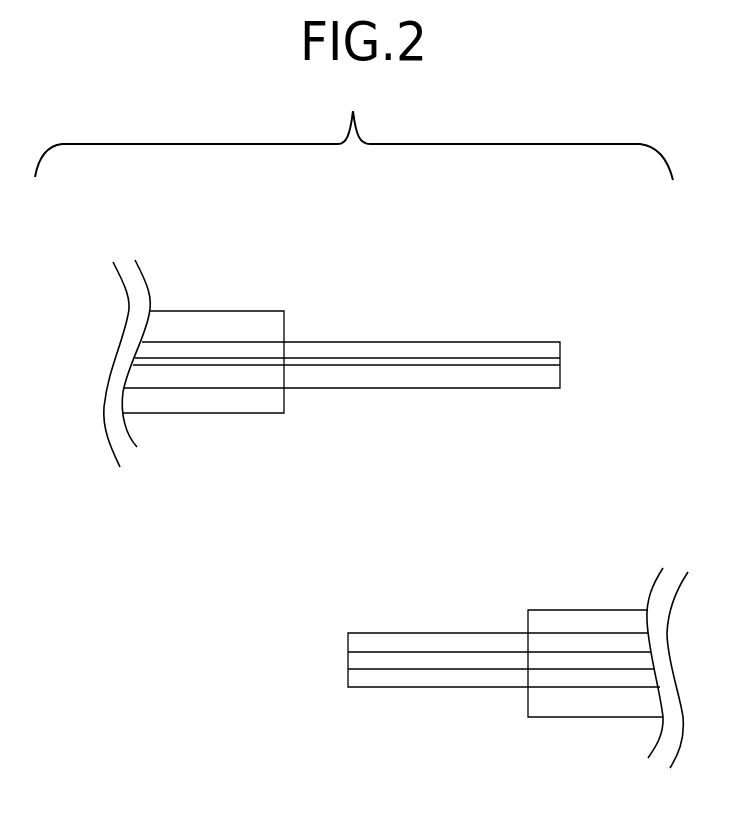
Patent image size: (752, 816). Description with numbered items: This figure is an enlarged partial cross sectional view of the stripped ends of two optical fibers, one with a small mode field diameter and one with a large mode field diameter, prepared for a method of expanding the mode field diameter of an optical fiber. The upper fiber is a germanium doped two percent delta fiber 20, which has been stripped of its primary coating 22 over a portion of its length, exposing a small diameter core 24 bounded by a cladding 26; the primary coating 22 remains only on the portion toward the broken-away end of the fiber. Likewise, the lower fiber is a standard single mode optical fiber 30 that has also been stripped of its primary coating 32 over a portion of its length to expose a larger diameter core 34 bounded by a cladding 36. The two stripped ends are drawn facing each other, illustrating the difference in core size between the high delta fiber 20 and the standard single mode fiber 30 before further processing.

The germanium doped 2% delta fiber 20 is at (347, 270).
The primary coating 22 is at (217, 320).
The small diameter core 24 is at (537, 365).
The cladding 26 is at (507, 355).
The optical fiber 30 is at (547, 565).
The primary coating 32 is at (577, 622).
The larger diameter core 34 is at (362, 665).
The cladding 36 is at (512, 681).